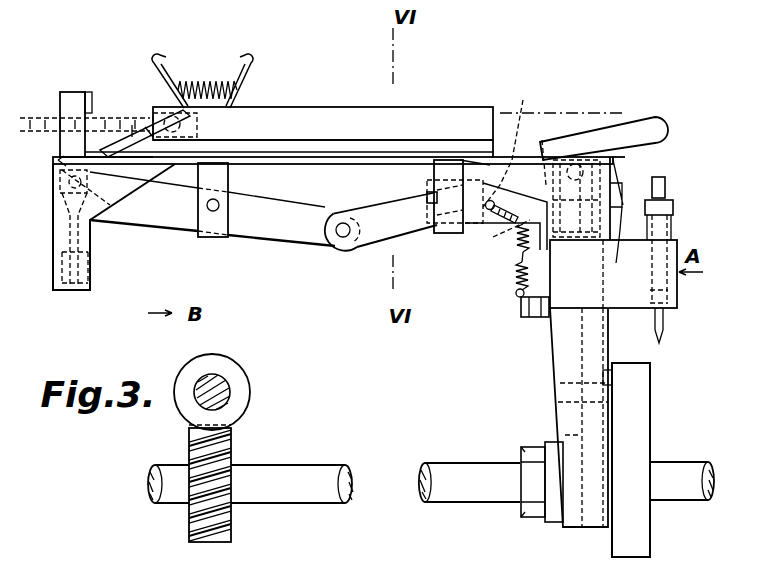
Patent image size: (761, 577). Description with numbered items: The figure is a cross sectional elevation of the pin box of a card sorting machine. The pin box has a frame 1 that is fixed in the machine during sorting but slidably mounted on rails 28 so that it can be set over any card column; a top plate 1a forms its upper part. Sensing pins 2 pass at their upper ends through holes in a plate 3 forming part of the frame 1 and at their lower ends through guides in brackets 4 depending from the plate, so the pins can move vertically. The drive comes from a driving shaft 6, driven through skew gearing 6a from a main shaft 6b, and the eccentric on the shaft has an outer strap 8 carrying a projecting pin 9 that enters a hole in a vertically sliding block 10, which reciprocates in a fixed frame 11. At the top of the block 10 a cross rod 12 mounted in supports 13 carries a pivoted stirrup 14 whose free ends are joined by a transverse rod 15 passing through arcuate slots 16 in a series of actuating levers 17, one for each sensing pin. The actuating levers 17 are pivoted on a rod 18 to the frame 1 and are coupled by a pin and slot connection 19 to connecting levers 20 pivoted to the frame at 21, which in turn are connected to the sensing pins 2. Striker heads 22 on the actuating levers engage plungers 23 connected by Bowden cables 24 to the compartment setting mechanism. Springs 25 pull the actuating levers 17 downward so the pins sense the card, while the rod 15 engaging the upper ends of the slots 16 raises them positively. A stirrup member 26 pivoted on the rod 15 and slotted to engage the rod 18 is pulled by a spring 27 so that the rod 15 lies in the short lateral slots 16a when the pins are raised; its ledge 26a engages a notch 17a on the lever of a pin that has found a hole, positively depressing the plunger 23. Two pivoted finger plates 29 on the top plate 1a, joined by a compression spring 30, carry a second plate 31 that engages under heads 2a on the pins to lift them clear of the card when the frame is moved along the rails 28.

The frame 1 is at (292, 152).
The top plate 1a is at (248, 140).
The sensing pins 2 is at (110, 203).
The heads 2a is at (90, 92).
The plate 3 is at (58, 162).
The brackets 4 is at (56, 229).
The driving shaft 6 is at (667, 465).
The skew gearing 6a is at (233, 438).
The main shaft 6b is at (222, 382).
The outer strap 8 is at (641, 398).
The projecting pin 9 is at (603, 373).
The sliding block 10 is at (580, 332).
The fixed frame 11 is at (590, 528).
The cross rod 12 is at (516, 278).
The supports 13 is at (531, 312).
The stirrup 14 is at (518, 240).
The transverse rod 15 is at (568, 160).
The arcuate slots 16 is at (485, 226).
The lateral slot 16a is at (616, 158).
The actuating levers 17 is at (365, 240).
The notch or shoulder 17a is at (613, 274).
The rod 18 is at (430, 206).
The pin and slot connection 19 is at (326, 242).
The connecting levers 20 is at (263, 237).
The pivot 21 is at (212, 212).
The striker heads 22 is at (607, 130).
The plunger 23 is at (665, 187).
The Bowden cable 24 is at (657, 340).
The springs 25 is at (518, 297).
The stirrup member 26 is at (463, 250).
The ledge or shoulder 26a is at (624, 274).
The spring 27 is at (500, 200).
The rails 28 is at (38, 117).
The finger plates 29 is at (247, 57).
The compression spring 30 is at (208, 82).
The second plate 31 is at (110, 142).